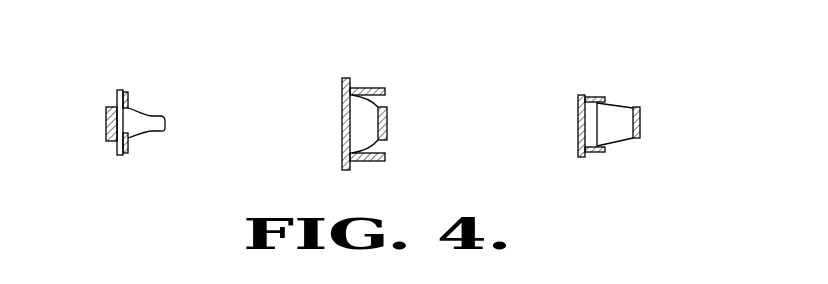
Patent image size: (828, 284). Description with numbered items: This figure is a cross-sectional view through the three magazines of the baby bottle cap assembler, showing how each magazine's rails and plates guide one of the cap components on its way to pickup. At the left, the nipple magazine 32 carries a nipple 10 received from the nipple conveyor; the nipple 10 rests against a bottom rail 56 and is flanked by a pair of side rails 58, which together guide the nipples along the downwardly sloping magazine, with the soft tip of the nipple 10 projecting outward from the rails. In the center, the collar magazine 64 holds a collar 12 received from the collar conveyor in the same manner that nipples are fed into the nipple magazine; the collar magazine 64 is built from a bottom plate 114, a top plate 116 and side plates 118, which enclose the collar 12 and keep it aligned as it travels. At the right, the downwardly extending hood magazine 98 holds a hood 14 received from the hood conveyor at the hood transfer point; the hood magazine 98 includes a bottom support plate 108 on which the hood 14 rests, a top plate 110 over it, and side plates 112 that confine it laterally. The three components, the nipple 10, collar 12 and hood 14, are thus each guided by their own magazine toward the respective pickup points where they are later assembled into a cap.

The nipple 10 is at (162, 108).
The collar 12 is at (403, 109).
The hood 14 is at (649, 116).
The nipple magazine 32 is at (136, 81).
The bottom rail 56 is at (107, 108).
The side rails 58 is at (123, 92).
The collar magazine 64 is at (368, 103).
The hood magazine 98 is at (617, 113).
The bottom support plate 108 is at (578, 112).
The top plate 110 is at (640, 118).
The side plates 112 is at (605, 150).
The bottom plate 114 is at (343, 100).
The top plate 116 is at (387, 120).
The side plates 118 is at (383, 160).